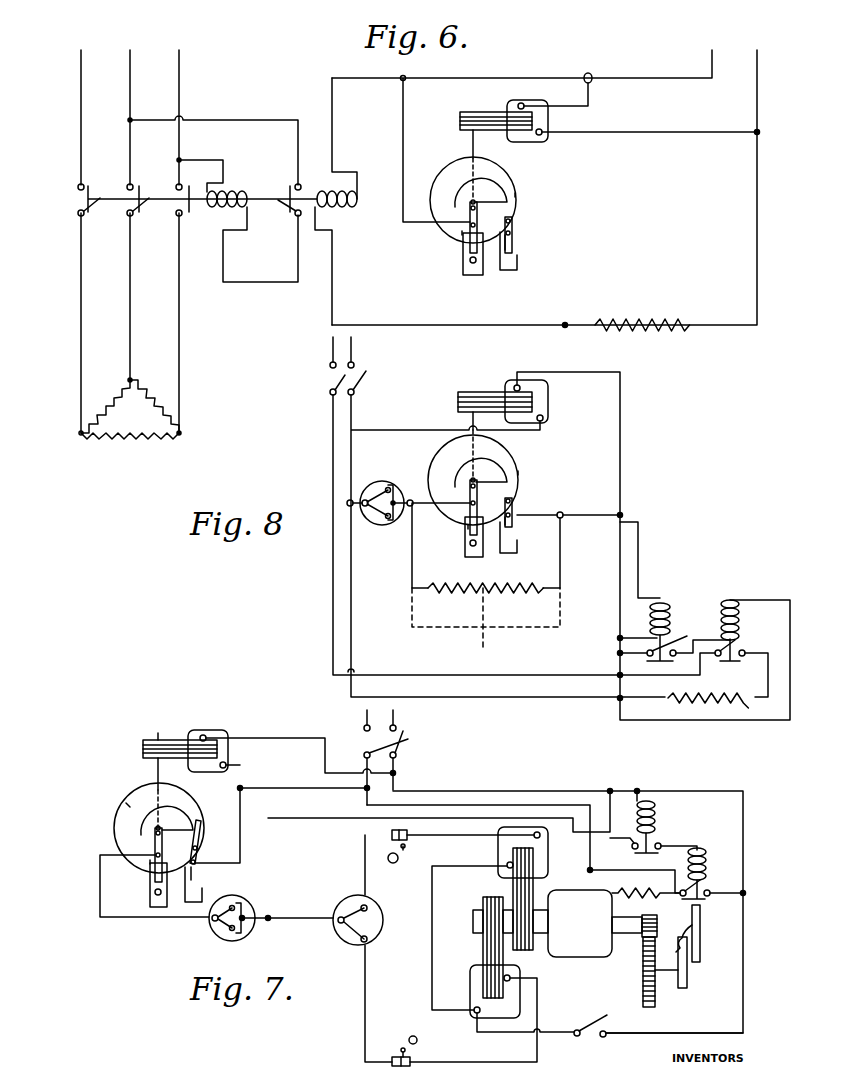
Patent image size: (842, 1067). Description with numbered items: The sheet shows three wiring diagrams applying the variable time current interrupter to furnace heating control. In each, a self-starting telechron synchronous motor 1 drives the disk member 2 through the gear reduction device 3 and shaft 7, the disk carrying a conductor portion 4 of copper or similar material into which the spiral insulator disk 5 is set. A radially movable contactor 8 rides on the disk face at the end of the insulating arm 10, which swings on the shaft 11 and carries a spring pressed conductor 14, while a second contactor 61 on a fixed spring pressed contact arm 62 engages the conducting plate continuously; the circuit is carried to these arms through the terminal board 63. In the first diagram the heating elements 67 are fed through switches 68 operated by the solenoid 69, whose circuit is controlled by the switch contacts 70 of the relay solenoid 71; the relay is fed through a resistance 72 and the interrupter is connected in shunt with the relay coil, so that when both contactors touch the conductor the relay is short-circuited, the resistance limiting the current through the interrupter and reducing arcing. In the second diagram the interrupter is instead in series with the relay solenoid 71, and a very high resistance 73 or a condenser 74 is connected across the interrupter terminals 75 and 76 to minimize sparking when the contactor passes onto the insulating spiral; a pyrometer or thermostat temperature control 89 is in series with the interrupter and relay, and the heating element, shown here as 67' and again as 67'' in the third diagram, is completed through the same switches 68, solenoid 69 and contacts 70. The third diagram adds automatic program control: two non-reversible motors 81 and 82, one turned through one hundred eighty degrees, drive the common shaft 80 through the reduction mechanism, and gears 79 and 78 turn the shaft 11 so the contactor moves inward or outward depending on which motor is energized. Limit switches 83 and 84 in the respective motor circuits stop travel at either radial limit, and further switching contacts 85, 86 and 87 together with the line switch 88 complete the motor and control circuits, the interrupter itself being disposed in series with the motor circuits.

In FIG. 6, the telechron synchronous motor 1 is at (479, 112).
In FIG. 8, the telechron synchronous motor 1 is at (486, 393).
In FIG. 7, the telechron synchronous motor 1 is at (170, 742).
In FIG. 6, the disk member 2 is at (513, 183).
In FIG. 8, the disk member 2 is at (510, 452).
In FIG. 7, the disk member 2 is at (118, 840).
In FIG. 7, the gear reduction device 3 is at (578, 948).
In FIG. 6, the conductor portion of the disk 4 is at (515, 195).
In FIG. 8, the conductor portion of the disk 4 is at (518, 473).
In FIG. 7, the conductor portion of the disk 4 is at (128, 805).
In FIG. 6, the insulator disk 5 is at (465, 183).
In FIG. 8, the insulator disk 5 is at (462, 468).
In FIG. 7, the insulator disk 5 is at (172, 811).
In FIG. 6, the shaft 7 is at (470, 139).
In FIG. 8, the shaft 7 is at (470, 418).
In FIG. 7, the shaft 7 is at (158, 770).
In FIG. 6, the contactor 8 is at (465, 200).
In FIG. 8, the contactor 8 is at (480, 476).
In FIG. 7, the contactor 8 is at (152, 828).
In FIG. 6, the arm 10 is at (463, 258).
In FIG. 8, the arm 10 is at (470, 557).
In FIG. 7, the arm 10 is at (157, 908).
In FIG. 6, the shaft 11 is at (466, 266).
In FIG. 8, the shaft 11 is at (466, 540).
In FIG. 7, the shaft 11 is at (150, 892).
In FIG. 6, the spring pressed conductor 14 is at (462, 233).
In FIG. 8, the spring pressed conductor 14 is at (468, 527).
In FIG. 7, the spring pressed conductor 14 is at (150, 862).
In FIG. 6, the contactor 61 is at (513, 220).
In FIG. 8, the contactor 61 is at (513, 495).
In FIG. 7, the contactor 61 is at (201, 836).
In FIG. 6, the spring pressed contact arm 62 is at (513, 246).
In FIG. 8, the spring pressed contact arm 62 is at (513, 518).
In FIG. 7, the spring pressed contact arm 62 is at (200, 870).
In FIG. 6, the terminal board 63 is at (518, 268).
In FIG. 8, the terminal board 63 is at (518, 545).
In FIG. 7, the terminal board 63 is at (196, 902).
In FIG. 6, the heating elements 67 is at (130, 408).
In FIG. 8, the resistor 67' is at (708, 719).
In FIG. 7, the resistor 67'' is at (646, 900).
In FIG. 6, the switches 68 is at (198, 218).
In FIG. 8, the switches 68 is at (742, 658).
In FIG. 7, the switches 68 is at (707, 888).
In FIG. 6, the solenoid 69 is at (227, 184).
In FIG. 8, the solenoid 69 is at (740, 620).
In FIG. 7, the solenoid 69 is at (705, 860).
In FIG. 6, the switch contacts 70 is at (299, 214).
In FIG. 8, the switch contacts 70 is at (672, 640).
In FIG. 7, the switch contacts 70 is at (648, 853).
In FIG. 6, the relay solenoid 71 is at (343, 212).
In FIG. 8, the relay solenoid 71 is at (670, 612).
In FIG. 7, the relay solenoid 71 is at (657, 822).
In FIG. 6, the resistance 72 is at (630, 318).
In FIG. 8, the high resistance 73 is at (480, 585).
In FIG. 8, the condenser 74 is at (488, 653).
In FIG. 8, the terminal 75 is at (418, 498).
In FIG. 8, the terminal 76 is at (562, 511).
In FIG. 7, the gear 78 is at (648, 1005).
In FIG. 7, the gear 79 is at (655, 918).
In FIG. 7, the shaft 80 is at (645, 940).
In FIG. 7, the motor 81 is at (518, 888).
In FIG. 7, the motor 82 is at (490, 943).
In FIG. 7, the limit switch 83 is at (408, 843).
In FIG. 7, the limit switch 84 is at (418, 1050).
In FIG. 7, the switch contact 85 is at (340, 944).
In FIG. 7, the switch contact 86 is at (236, 941).
In FIG. 7, the switch 87 is at (598, 1040).
In FIG. 8, the double pole switch 88 is at (328, 376).
In FIG. 7, the double pole switch 88 is at (358, 733).
In FIG. 8, the switch contact 89 is at (386, 525).